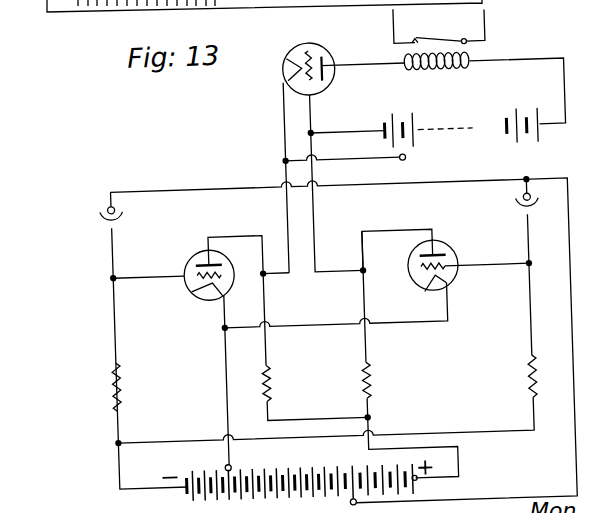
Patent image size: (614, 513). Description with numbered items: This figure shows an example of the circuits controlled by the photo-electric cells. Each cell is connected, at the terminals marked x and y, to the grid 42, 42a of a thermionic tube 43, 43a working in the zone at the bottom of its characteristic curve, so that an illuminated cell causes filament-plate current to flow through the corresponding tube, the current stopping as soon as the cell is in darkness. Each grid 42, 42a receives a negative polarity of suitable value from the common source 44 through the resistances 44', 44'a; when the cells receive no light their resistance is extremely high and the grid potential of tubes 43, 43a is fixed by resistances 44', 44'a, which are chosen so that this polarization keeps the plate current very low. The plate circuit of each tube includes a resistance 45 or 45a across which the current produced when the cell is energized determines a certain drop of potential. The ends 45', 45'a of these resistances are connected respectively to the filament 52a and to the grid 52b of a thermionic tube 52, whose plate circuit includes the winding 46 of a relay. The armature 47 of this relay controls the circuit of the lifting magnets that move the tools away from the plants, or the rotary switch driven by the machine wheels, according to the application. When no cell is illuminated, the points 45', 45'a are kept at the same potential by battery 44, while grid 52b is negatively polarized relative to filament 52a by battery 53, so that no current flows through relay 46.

The thermionic tube 52 is at (331, 47).
The filament 52a is at (297, 57).
The grid 52b is at (324, 80).
The armature 47 is at (446, 44).
The winding 46 is at (452, 76).
The battery 53 is at (420, 145).
The input terminal x is at (99, 213).
The input terminal y is at (517, 211).
The thermionic tube 43 is at (199, 249).
The grid 42 is at (203, 279).
The end of resistance 45' is at (249, 276).
The thermionic tube 43a is at (445, 246).
The grid 42a is at (451, 271).
The end of resistance 45'a is at (397, 249).
The resistance 44' is at (94, 388).
The resistance 45 is at (283, 336).
The resistance 45a is at (368, 374).
The resistance 44'a is at (502, 377).
The common source 44 is at (297, 475).